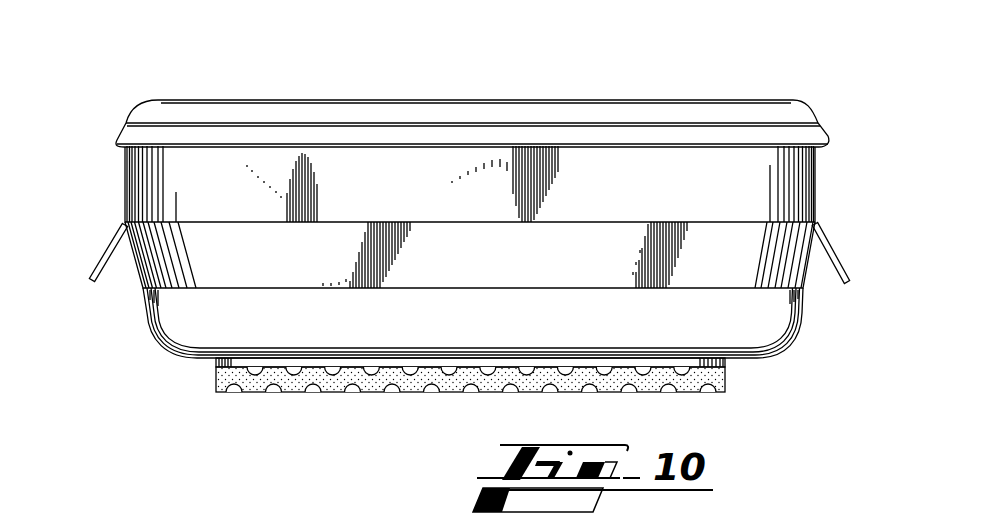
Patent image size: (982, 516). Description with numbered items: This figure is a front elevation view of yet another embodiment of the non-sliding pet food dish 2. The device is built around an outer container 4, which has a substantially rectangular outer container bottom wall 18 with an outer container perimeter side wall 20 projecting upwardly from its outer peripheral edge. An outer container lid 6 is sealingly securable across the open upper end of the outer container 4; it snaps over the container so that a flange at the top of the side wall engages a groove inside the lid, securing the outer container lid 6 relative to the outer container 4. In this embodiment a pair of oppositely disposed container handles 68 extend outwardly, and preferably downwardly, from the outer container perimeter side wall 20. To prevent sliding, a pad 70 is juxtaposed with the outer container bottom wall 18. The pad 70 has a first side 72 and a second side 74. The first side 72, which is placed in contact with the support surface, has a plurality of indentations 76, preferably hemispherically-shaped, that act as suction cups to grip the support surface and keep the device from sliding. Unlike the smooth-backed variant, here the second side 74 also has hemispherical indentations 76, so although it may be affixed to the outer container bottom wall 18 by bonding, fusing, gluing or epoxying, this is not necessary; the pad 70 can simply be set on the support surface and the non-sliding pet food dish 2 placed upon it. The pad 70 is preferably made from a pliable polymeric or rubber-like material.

The non-sliding pet food dish 2 is at (181, 56).
The outer container 4 is at (817, 176).
The outer container lid 6 is at (455, 100).
The outer container bottom wall 18 is at (280, 363).
The outer container perimeter side wall 20 is at (230, 247).
The container handles 68 is at (120, 232).
The pad 70 is at (372, 392).
The first side 72 is at (450, 392).
The second side 74 is at (397, 357).
The indentations 76 is at (484, 366).